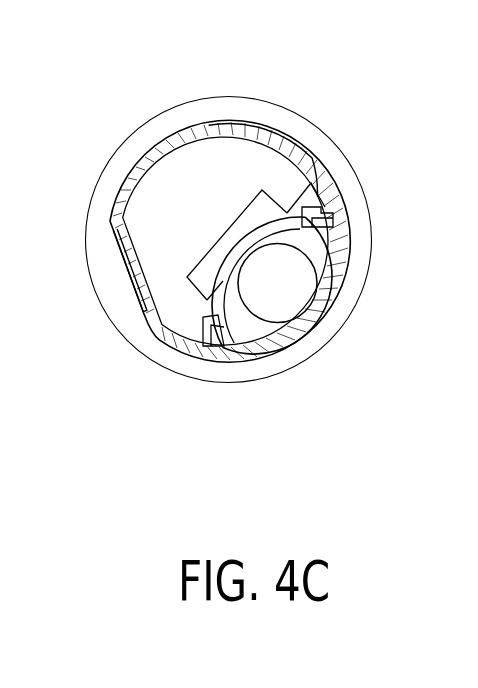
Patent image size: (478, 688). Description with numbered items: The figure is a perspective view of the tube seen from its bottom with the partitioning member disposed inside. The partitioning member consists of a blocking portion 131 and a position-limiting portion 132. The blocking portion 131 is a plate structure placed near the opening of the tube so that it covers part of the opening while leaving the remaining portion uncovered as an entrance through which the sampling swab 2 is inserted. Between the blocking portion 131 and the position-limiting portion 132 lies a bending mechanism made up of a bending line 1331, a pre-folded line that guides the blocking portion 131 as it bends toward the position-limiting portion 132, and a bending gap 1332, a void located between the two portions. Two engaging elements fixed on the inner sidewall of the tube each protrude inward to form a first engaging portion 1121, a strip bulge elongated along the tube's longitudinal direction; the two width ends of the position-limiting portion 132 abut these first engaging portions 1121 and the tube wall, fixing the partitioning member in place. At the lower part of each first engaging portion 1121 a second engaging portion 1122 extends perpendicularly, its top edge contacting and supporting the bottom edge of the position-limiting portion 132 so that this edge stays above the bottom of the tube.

The sampling swab 2 is at (283, 290).
The blocking portion 131 is at (258, 158).
The position-limiting portion 132 is at (334, 262).
The first engaging portion 1121 is at (322, 199).
The second engaging portion 1122 is at (222, 336).
The bending line 1331 is at (304, 152).
The bending gap 1332 is at (200, 262).